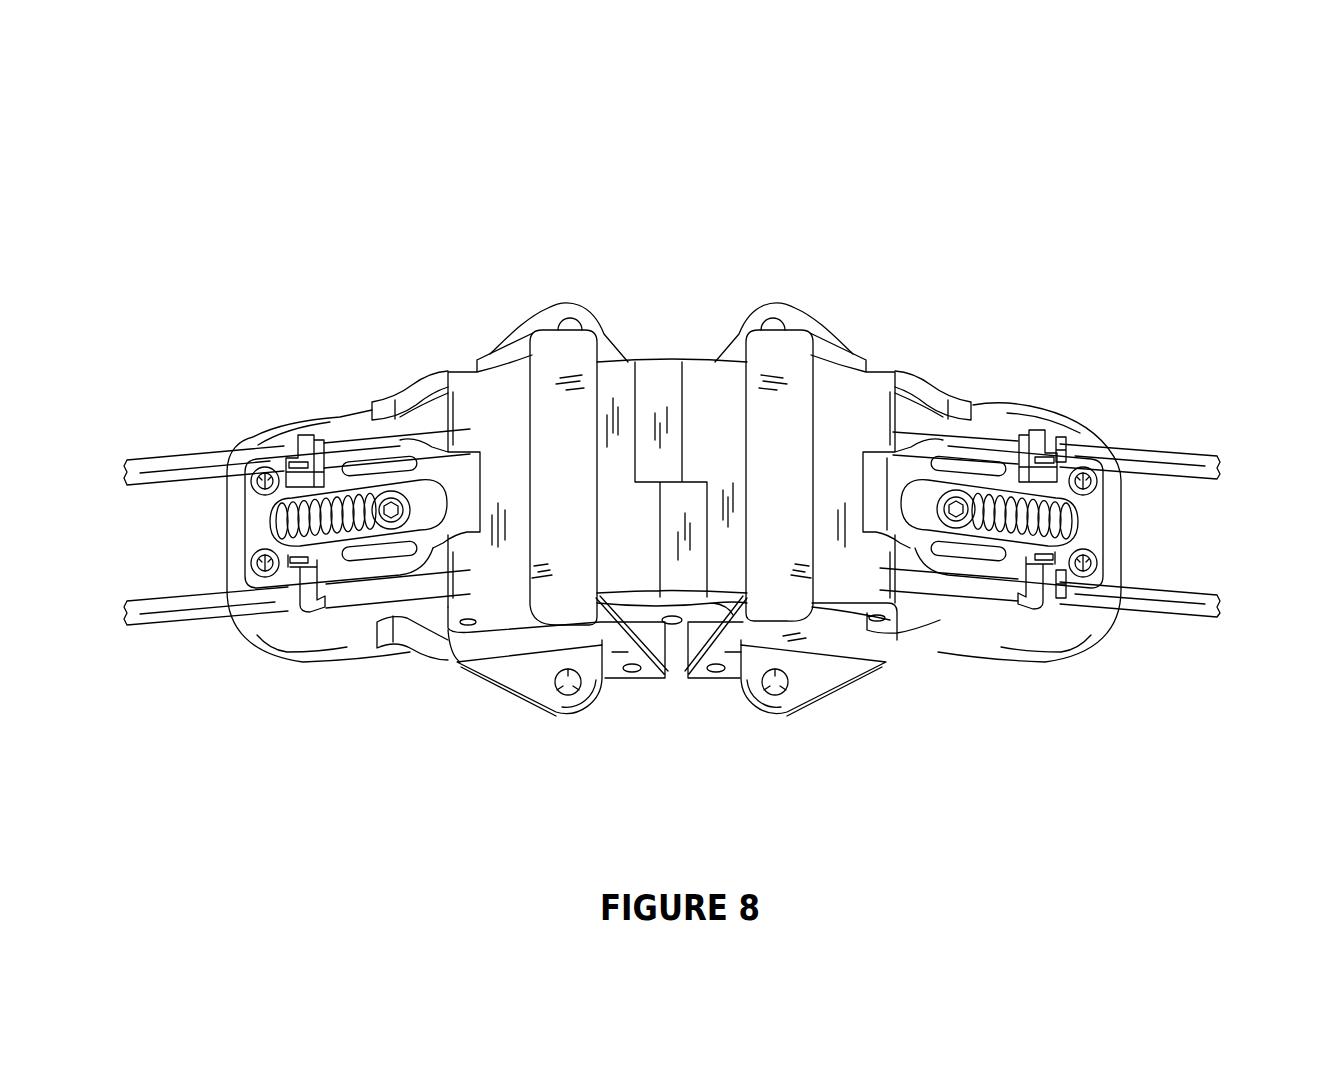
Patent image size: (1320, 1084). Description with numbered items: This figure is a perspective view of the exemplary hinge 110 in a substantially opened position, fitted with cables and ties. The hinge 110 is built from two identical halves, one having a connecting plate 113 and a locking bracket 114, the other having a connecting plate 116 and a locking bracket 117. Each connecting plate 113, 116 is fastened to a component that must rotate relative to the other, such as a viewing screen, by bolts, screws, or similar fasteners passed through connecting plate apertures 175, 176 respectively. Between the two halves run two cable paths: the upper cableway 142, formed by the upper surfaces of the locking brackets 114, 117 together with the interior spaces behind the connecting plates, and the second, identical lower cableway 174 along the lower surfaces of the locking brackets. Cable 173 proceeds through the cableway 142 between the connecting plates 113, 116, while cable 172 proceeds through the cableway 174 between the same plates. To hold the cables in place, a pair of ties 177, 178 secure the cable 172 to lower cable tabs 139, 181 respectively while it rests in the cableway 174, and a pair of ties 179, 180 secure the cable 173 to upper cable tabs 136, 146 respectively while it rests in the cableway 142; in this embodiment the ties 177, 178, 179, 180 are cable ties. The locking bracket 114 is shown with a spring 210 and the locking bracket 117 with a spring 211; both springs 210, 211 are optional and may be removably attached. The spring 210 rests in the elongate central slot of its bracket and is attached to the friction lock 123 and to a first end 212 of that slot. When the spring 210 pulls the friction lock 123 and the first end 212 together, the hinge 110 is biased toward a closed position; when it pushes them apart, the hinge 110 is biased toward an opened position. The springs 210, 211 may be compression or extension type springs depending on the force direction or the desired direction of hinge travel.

The hinge 110 is at (689, 211).
The connecting plate 113 is at (801, 302).
The locking bracket 114 is at (976, 574).
The connecting plate 116 is at (531, 305).
The locking bracket 117 is at (242, 553).
The friction lock 123 is at (951, 488).
The upper cable tab 136 is at (1062, 444).
The lower cable tab 139 is at (1065, 597).
The cableway 142 is at (436, 414).
The upper cable tab 146 is at (269, 461).
The cable 172 is at (1188, 623).
The cable 173 is at (1190, 439).
The second cableway 174 is at (441, 599).
The connecting plate aperture 175 is at (783, 708).
The connecting plate aperture 176 is at (562, 708).
The tie 177 is at (1036, 606).
The tie 178 is at (312, 612).
The tie 179 is at (1035, 424).
The tie 180 is at (300, 429).
The lower cable tab 181 is at (279, 599).
The spring 210 is at (1078, 521).
The spring 211 is at (269, 520).
The first end of elongate central slot 212 is at (1102, 540).